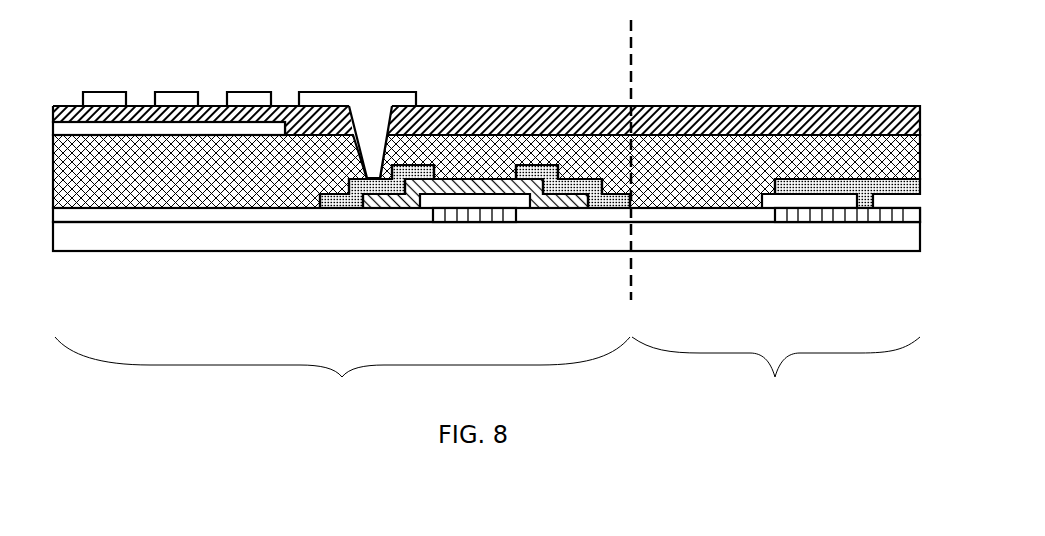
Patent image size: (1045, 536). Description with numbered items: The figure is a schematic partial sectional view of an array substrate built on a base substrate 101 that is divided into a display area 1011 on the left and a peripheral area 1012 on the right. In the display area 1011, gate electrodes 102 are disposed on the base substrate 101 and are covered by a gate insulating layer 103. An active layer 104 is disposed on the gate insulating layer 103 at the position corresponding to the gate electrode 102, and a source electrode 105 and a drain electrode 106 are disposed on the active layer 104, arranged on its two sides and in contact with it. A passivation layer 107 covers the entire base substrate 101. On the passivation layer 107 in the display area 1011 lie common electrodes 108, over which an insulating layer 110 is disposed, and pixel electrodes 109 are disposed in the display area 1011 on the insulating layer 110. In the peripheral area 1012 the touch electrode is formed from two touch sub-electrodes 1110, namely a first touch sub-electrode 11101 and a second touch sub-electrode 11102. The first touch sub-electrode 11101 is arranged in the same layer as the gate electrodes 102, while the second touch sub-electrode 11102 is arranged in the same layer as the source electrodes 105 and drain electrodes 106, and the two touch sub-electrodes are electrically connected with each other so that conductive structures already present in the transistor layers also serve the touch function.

The base substrate 101 is at (155, 236).
The gate electrode 102 is at (463, 215).
The gate insulating layer 103 is at (257, 215).
The active layer 104 is at (480, 127).
The source electrode 105 is at (597, 208).
The drain electrode 106 is at (346, 208).
The passivation layer 107 is at (720, 123).
The common electrode 108 is at (223, 129).
The pixel electrode 109 is at (363, 112).
The insulating layer 110 is at (590, 127).
The display area 1011 is at (342, 371).
The peripheral area 1012 is at (776, 372).
The touch sub-electrode 1110 is at (823, 261).
The first touch sub-electrode 11101 is at (812, 213).
The second touch sub-electrode 11102 is at (903, 195).